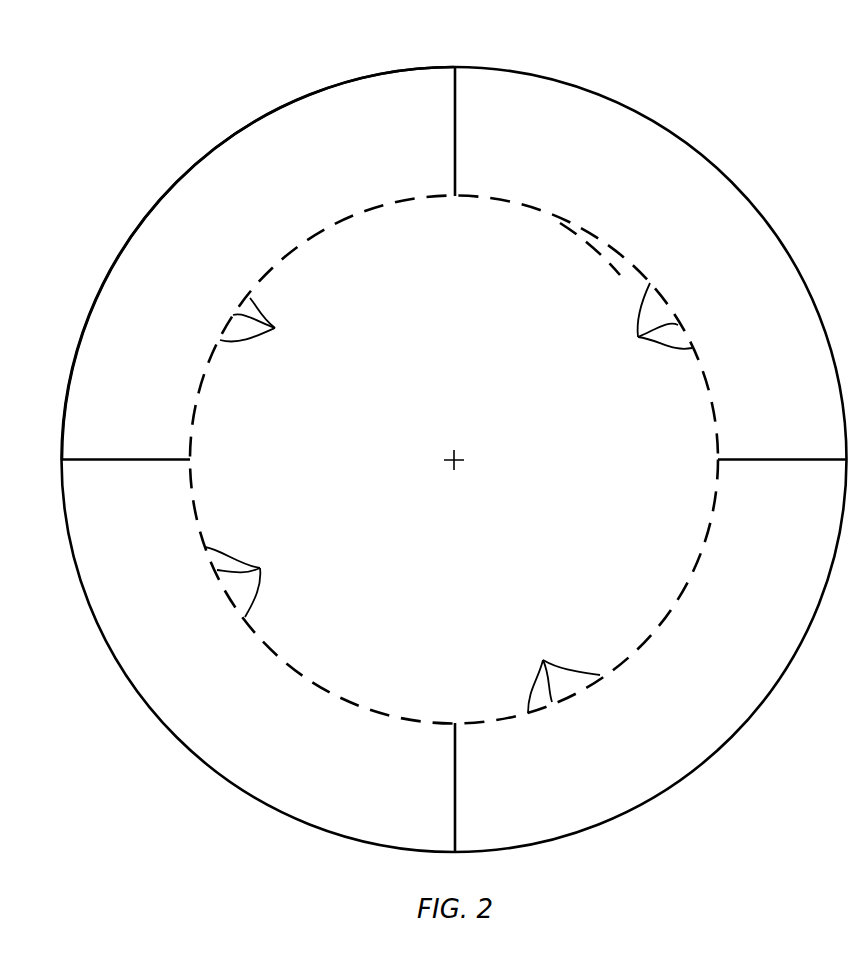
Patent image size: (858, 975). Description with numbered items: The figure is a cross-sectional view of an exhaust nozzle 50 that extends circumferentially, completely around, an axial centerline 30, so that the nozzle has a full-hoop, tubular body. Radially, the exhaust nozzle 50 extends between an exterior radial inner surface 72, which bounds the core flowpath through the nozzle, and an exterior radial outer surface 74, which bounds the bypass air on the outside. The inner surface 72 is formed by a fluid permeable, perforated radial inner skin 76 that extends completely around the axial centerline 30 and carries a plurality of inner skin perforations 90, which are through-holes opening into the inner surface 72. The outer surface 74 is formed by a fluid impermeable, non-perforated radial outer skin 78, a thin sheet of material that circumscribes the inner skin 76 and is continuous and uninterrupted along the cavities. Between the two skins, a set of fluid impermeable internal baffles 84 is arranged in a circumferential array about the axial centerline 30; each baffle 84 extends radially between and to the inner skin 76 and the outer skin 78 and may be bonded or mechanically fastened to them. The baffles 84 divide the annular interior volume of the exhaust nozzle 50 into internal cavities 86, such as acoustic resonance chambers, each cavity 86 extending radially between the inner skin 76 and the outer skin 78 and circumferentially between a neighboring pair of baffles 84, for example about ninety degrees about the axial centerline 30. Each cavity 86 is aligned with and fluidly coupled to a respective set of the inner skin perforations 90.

The axial centerline 30 is at (457, 462).
The exhaust nozzle 50 is at (768, 88).
The radial inner surface 72 is at (343, 222).
The radial outer surface 74 is at (250, 120).
The radial inner skin 76 is at (560, 226).
The radial outer skin 78 is at (623, 98).
The internal baffles 84 is at (462, 128).
The internal cavities 86 is at (194, 234).
The inner skin perforations 90 is at (448, 498).